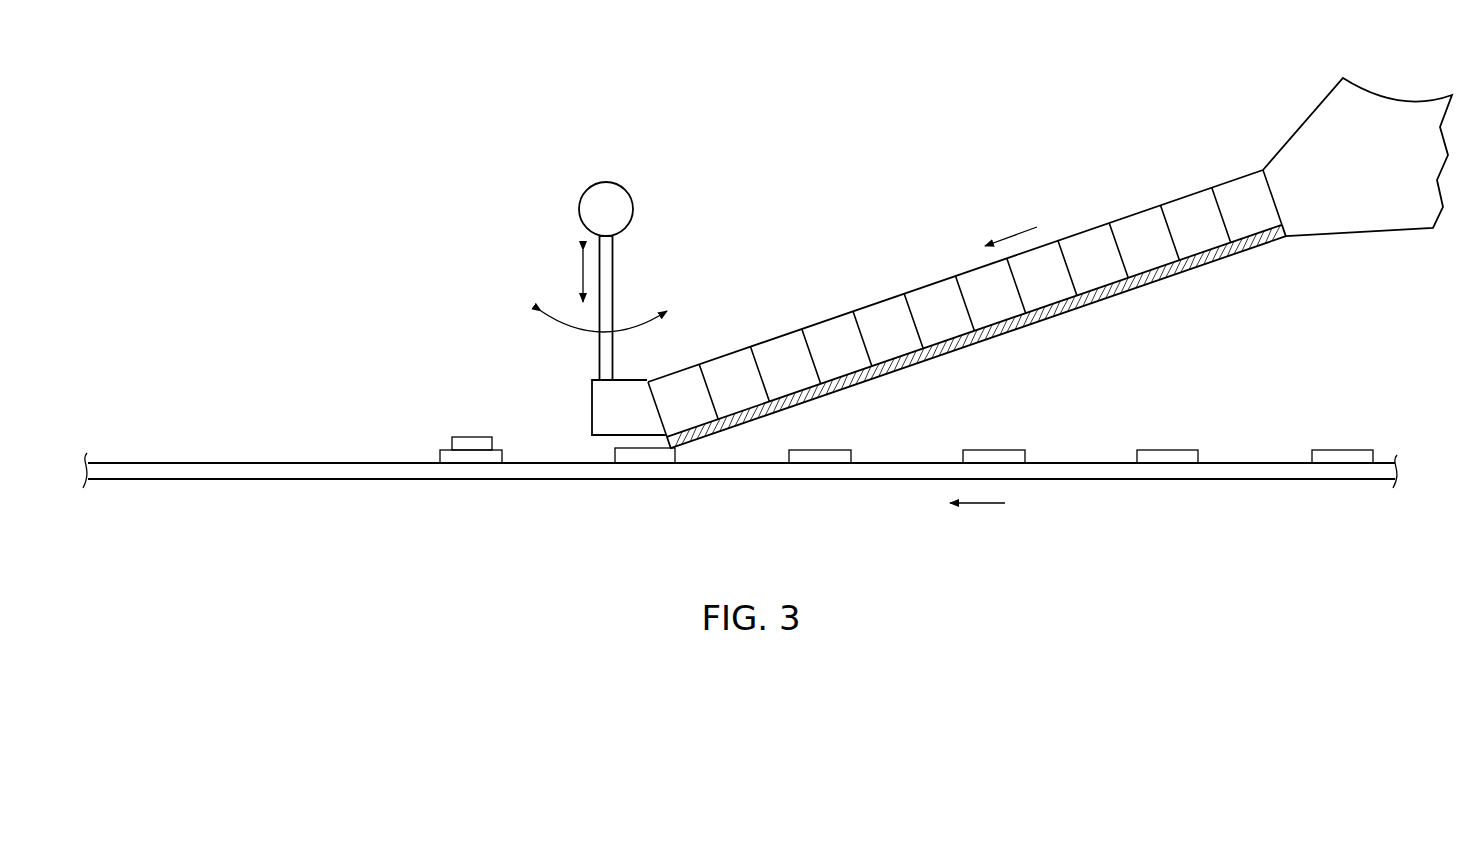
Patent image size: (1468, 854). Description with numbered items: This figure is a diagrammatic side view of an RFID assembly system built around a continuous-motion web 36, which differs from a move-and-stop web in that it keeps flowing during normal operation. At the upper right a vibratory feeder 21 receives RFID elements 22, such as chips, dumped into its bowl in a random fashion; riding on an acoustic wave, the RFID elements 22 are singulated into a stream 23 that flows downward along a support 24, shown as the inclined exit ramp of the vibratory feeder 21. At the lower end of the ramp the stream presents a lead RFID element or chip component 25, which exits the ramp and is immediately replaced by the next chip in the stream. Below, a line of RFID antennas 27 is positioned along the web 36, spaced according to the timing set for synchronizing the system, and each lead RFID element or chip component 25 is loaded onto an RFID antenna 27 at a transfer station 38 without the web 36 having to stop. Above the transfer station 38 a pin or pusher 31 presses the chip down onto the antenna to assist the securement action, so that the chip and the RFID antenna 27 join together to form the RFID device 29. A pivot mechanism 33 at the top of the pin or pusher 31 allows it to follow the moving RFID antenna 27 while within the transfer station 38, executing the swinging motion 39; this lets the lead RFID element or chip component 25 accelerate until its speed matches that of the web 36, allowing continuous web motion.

The vibratory feeder 21 is at (1267, 130).
The RFID elements 22 is at (480, 437).
The stream 23 is at (775, 327).
The support 24 is at (1107, 297).
The lead RFID element or chip component 25 is at (632, 392).
The RFID antennas 27 is at (502, 450).
The RFID device 29 is at (440, 440).
The pin or pusher 31 is at (608, 272).
The pivot mechanism 33 is at (628, 207).
The continuous-motion web 36 is at (1275, 472).
The transfer station 38 is at (610, 483).
The swinging motion 39 is at (560, 327).